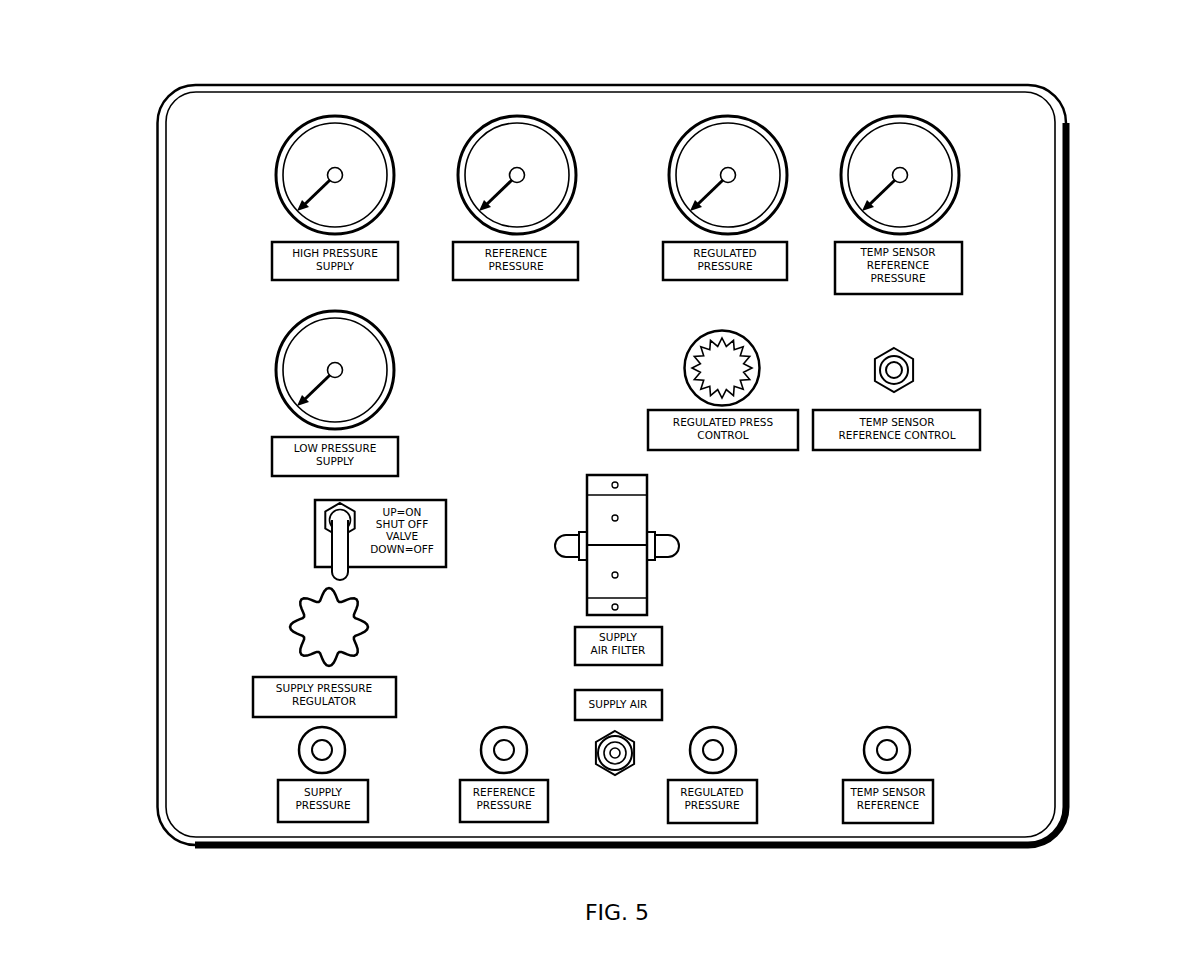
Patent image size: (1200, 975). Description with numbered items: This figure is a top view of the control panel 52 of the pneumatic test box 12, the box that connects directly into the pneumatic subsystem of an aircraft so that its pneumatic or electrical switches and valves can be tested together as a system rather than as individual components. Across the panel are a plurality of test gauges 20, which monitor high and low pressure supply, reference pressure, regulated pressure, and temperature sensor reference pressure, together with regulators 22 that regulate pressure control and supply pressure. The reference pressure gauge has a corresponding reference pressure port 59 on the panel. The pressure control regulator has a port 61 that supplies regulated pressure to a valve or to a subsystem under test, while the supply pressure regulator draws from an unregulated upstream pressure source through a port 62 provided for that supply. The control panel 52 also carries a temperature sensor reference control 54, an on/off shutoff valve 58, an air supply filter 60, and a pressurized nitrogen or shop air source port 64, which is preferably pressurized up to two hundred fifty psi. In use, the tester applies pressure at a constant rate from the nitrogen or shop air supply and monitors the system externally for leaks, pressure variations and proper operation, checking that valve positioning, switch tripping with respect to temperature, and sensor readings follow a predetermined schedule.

The pneumatic test box 12 is at (1108, 173).
The test gauges 20 is at (487, 118).
The regulators 22 is at (760, 360).
The control panel 52 is at (1025, 502).
The temperature sensor reference control 54 is at (912, 744).
The on/off shutoff valve 58 is at (316, 530).
The reference pressure port 59 is at (482, 753).
The air supply filter 60 is at (640, 577).
The port 61 is at (735, 752).
The port 62 is at (300, 752).
The pressurized nitrogen or shop air source port 64 is at (600, 772).